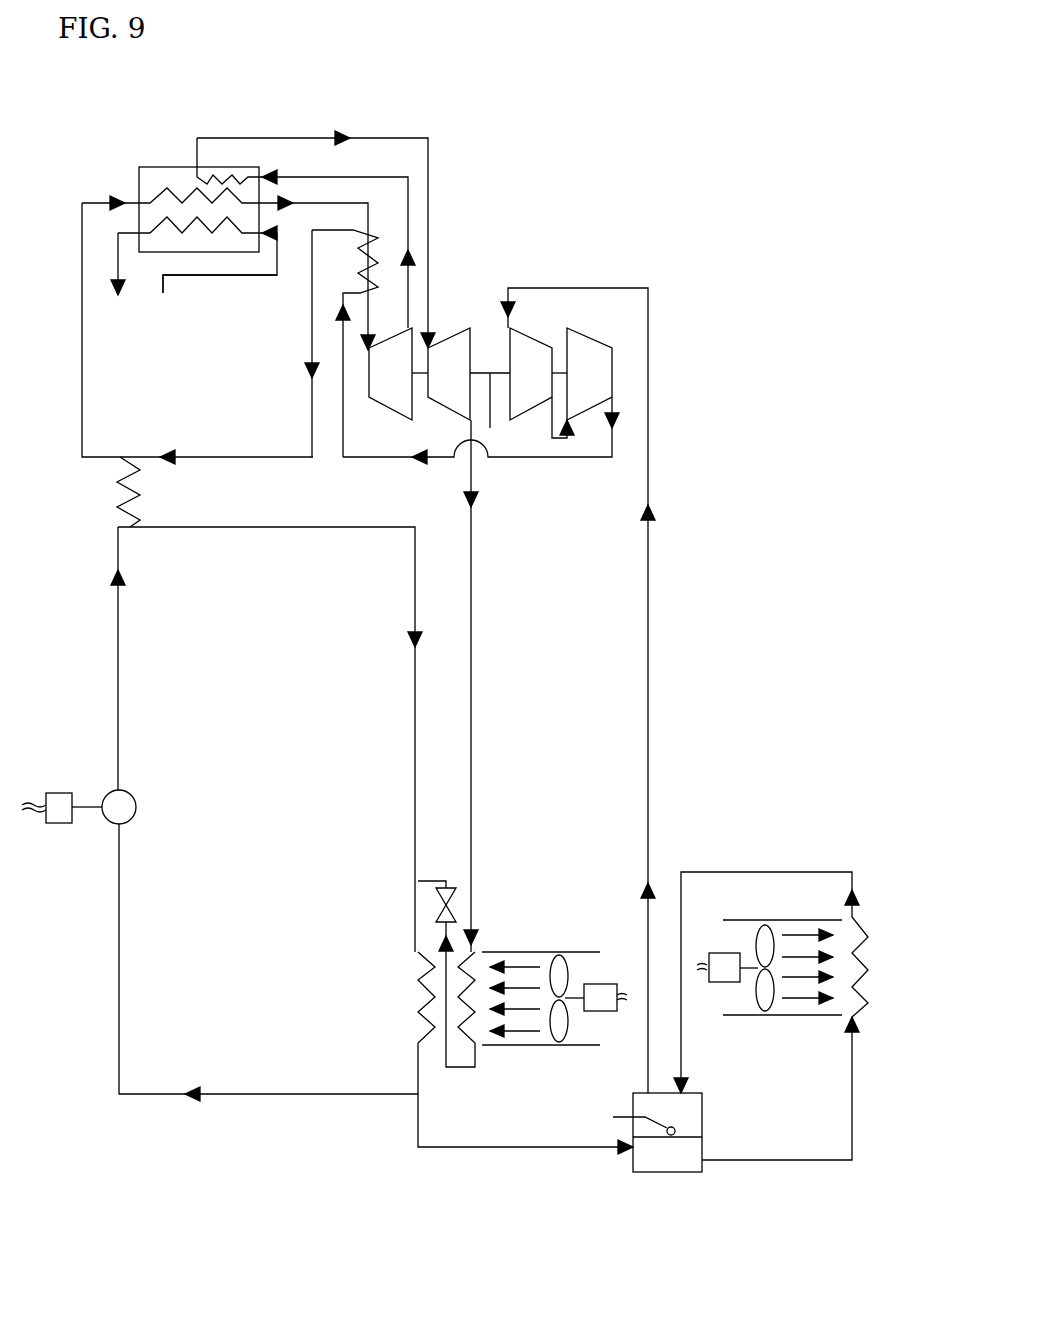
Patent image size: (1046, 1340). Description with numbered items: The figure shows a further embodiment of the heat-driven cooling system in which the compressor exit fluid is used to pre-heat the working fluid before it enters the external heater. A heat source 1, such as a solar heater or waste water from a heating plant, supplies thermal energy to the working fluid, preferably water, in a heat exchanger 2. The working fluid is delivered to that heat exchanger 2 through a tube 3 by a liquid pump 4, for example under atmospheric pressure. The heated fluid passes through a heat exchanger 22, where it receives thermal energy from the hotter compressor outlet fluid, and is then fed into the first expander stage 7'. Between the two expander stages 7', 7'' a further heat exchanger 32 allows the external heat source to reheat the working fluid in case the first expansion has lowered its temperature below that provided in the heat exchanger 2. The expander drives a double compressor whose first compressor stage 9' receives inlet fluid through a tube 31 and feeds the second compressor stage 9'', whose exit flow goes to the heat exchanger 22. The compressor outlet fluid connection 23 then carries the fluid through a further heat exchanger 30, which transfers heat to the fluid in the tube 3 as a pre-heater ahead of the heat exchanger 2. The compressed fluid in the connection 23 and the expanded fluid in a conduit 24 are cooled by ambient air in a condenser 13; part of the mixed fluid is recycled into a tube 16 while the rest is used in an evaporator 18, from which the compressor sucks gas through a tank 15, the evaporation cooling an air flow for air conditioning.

The heat source 1 is at (220, 280).
The heat exchanger 2 is at (163, 167).
The tube 3 is at (83, 370).
The liquid pump 4 is at (122, 810).
The first expander stage 7' is at (398, 374).
The second expander stage 7'' is at (469, 378).
The first compressor stage 9' is at (589, 374).
The second compressor stage 9'' is at (542, 383).
The condenser 13 is at (519, 938).
The tank 15 is at (667, 1157).
The tube 16 is at (121, 975).
The evaporator 18 is at (863, 917).
The heat exchanger 22 is at (383, 248).
The compressor outlet fluid connection 23 is at (253, 452).
The conduit 24 is at (473, 652).
The heat exchanger 30 is at (150, 490).
The tube 31 is at (649, 628).
The heat exchanger 32 is at (220, 175).